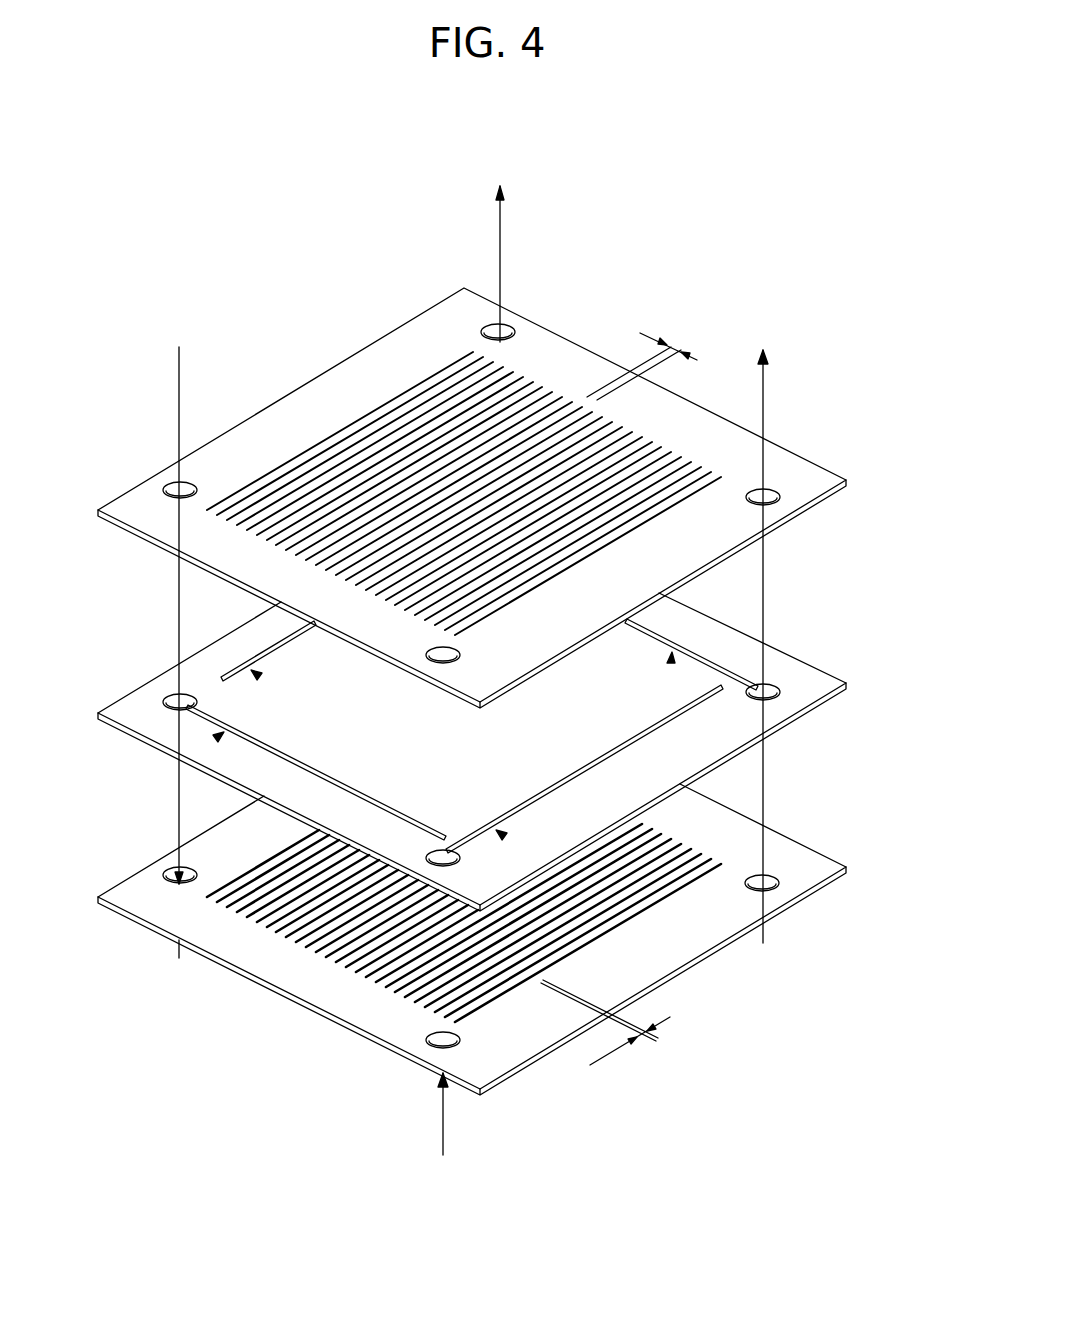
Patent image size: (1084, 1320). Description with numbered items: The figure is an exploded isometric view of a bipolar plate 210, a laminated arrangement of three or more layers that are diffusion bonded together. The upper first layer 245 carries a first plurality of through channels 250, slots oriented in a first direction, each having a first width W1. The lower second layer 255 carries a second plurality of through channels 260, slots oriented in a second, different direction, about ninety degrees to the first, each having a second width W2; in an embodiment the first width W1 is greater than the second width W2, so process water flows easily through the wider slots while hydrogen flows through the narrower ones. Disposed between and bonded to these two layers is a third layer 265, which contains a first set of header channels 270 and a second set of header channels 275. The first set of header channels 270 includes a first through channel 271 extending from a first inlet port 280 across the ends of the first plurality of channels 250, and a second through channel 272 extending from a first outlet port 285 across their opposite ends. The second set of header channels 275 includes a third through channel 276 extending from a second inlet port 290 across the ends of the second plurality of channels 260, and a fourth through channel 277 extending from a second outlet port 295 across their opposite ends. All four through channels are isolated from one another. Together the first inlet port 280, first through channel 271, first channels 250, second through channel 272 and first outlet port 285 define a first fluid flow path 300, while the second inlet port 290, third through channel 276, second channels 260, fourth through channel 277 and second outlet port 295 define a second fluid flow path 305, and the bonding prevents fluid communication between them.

The bipolar plate 210 is at (175, 223).
The first layer 245 is at (578, 338).
The first plurality of through channels 250 is at (372, 418).
The second layer 255 is at (690, 970).
The second plurality of through channels 260 is at (332, 917).
The third layer 265 is at (845, 675).
The first set of header channels 270 is at (216, 738).
The first through channel 271 is at (327, 770).
The second through channel 272 is at (643, 627).
The second set of header channels 275 is at (258, 675).
The third through channel 276 is at (603, 753).
The fourth through channel 277 is at (273, 640).
The first inlet port 280 is at (170, 695).
The first outlet port 285 is at (768, 505).
The second inlet port 290 is at (430, 657).
The second outlet port 295 is at (485, 327).
The first fluid flow path 300 is at (178, 425).
The second fluid flow path 305 is at (503, 267).
The first width W1 is at (642, 353).
The second width W2 is at (607, 1060).